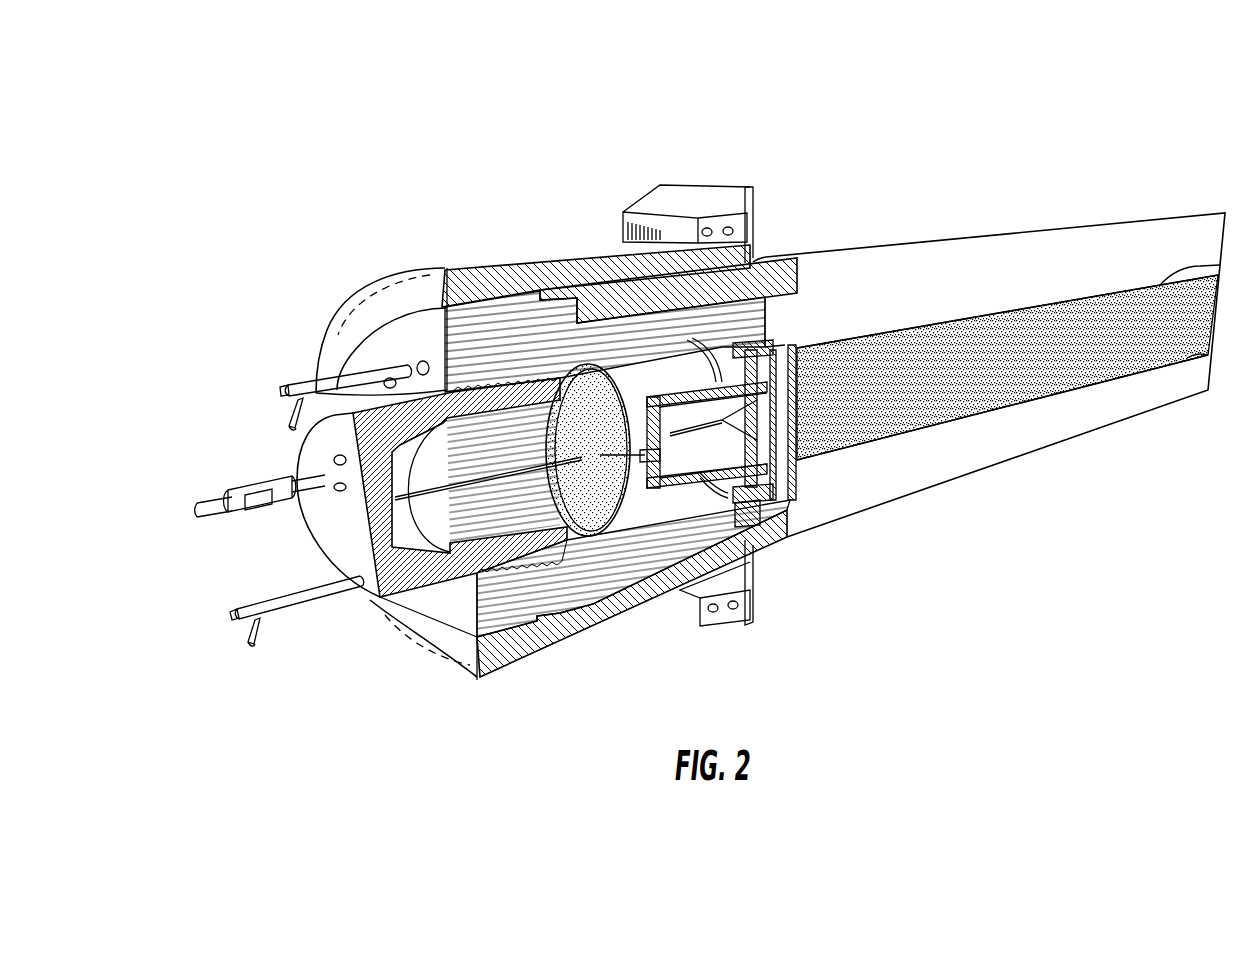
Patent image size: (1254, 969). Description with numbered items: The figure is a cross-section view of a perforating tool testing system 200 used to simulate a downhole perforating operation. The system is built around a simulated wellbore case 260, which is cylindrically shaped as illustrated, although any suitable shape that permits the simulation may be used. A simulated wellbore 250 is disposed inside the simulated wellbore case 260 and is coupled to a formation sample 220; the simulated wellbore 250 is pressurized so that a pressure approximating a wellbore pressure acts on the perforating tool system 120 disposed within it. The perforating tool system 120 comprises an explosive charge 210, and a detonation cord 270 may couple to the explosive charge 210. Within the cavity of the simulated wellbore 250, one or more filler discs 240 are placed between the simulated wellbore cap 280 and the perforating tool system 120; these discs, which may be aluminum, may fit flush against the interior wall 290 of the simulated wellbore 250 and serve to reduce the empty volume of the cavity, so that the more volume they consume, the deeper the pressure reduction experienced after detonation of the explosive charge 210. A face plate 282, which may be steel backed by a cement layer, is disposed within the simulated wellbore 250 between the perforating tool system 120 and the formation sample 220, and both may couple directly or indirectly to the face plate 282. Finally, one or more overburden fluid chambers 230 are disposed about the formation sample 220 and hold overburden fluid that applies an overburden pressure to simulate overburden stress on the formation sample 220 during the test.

The perforating tool testing system 200 is at (666, 397).
The perforating tool system 120 is at (443, 522).
The explosive charge 210 is at (785, 413).
The formation sample 220 is at (1007, 361).
The overburden fluid chambers 230 is at (989, 375).
The filler discs 240 is at (683, 418).
The simulated wellbore 250 is at (553, 511).
The simulated wellbore case 260 is at (619, 254).
The detonation cord 270 is at (488, 472).
The simulated wellbore cap 280 is at (432, 523).
The face plate 282 is at (715, 405).
The interior wall 290 is at (588, 537).